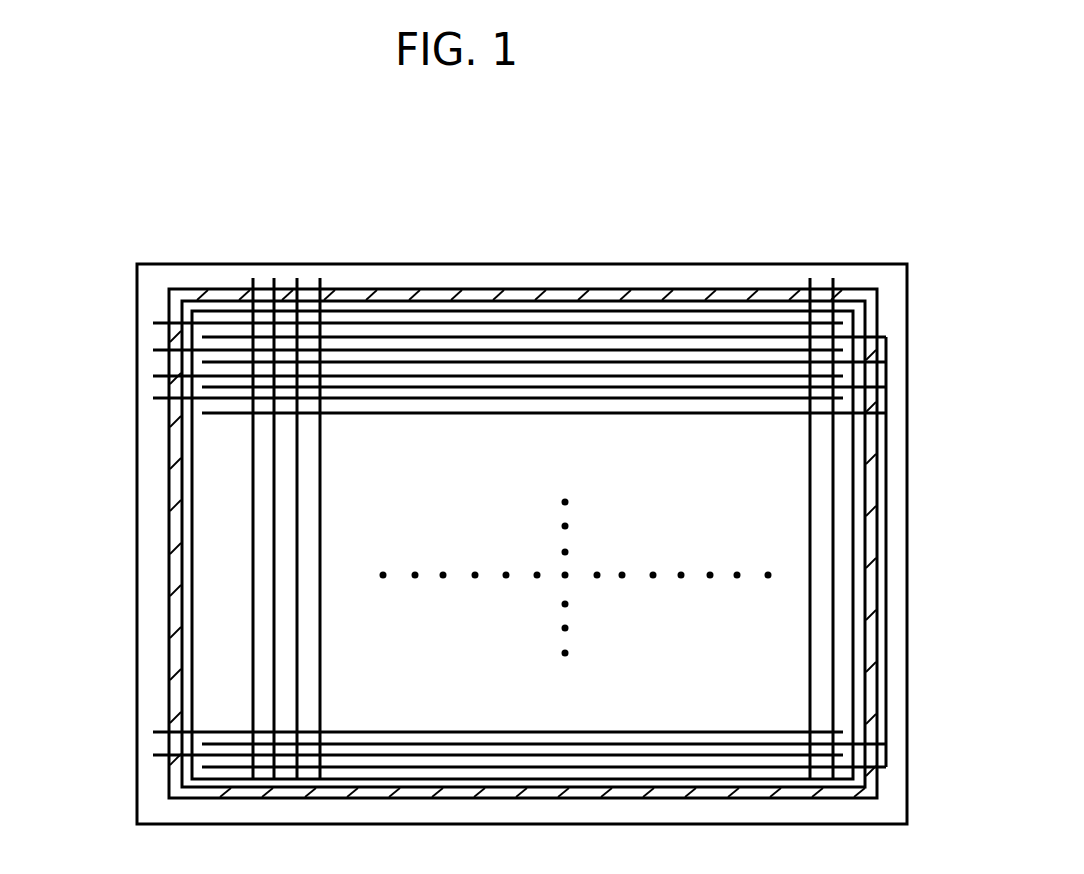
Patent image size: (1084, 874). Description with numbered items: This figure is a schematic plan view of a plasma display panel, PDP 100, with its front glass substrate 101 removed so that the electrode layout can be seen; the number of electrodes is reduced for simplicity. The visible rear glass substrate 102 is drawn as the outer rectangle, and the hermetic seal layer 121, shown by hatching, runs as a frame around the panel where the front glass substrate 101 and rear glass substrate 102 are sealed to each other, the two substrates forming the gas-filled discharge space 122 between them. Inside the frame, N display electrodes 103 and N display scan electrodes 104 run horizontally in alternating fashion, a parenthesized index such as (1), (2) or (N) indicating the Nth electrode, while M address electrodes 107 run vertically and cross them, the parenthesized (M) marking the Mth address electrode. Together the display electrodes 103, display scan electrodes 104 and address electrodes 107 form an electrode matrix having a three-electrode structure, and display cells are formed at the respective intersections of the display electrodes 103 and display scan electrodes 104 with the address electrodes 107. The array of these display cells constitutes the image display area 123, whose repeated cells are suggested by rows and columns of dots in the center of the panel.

The PDP 100 is at (500, 496).
The front glass substrate 101 is at (865, 263).
The rear glass substrate 102 is at (549, 507).
The display electrode 103 is at (213, 413).
The display scan electrode 104 is at (153, 323).
The address electrode 107 is at (253, 280).
The hermetic seal layer 121 is at (508, 298).
The discharge space 122 is at (620, 445).
The image display area 123 is at (190, 558).